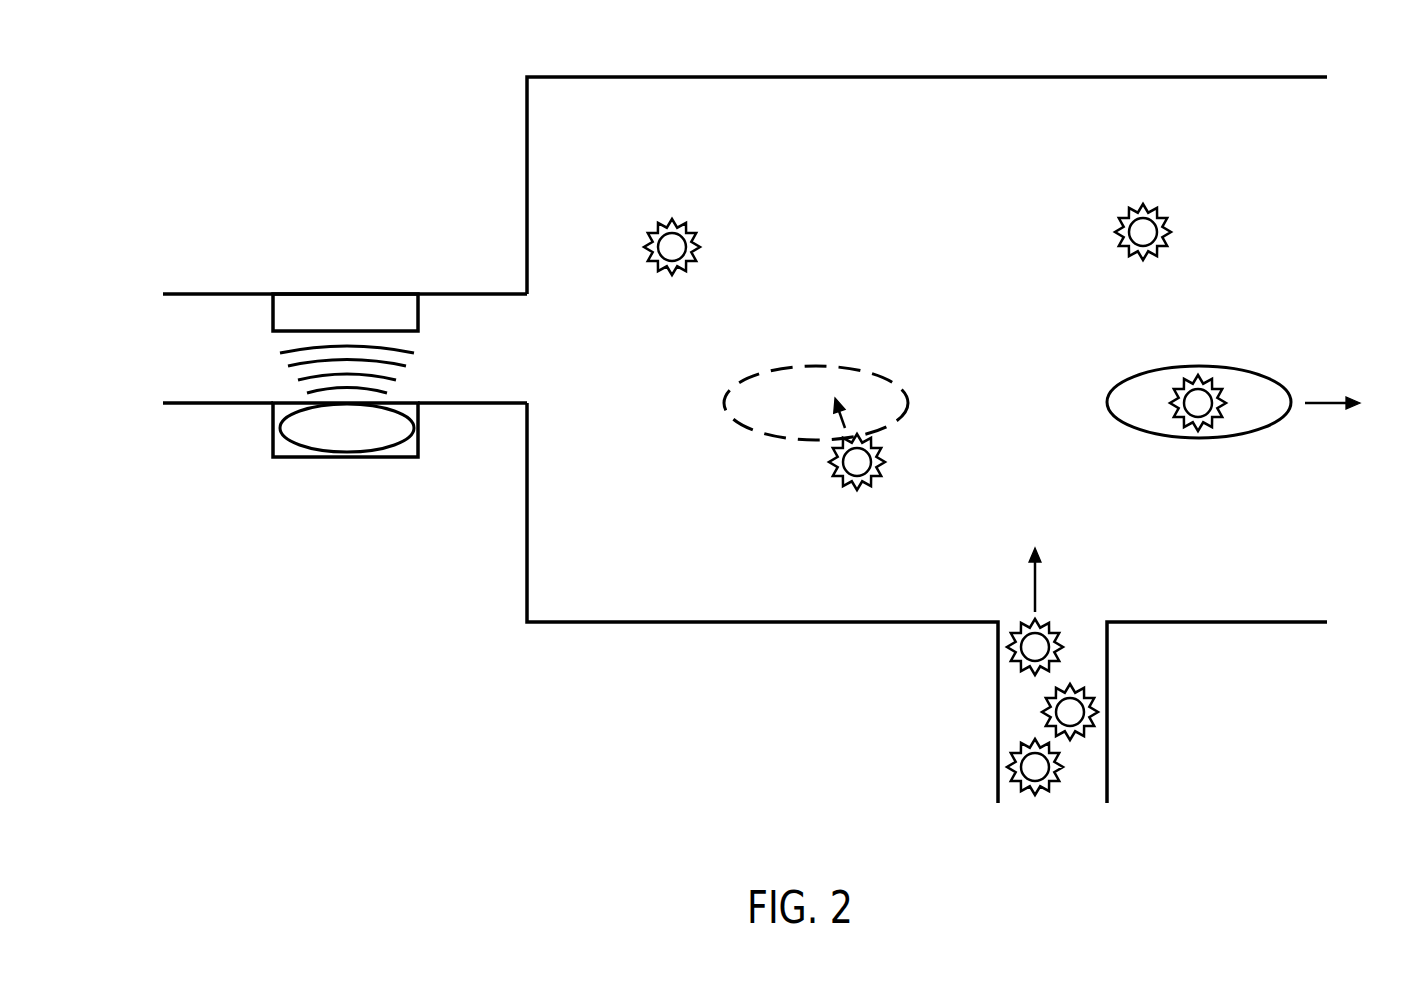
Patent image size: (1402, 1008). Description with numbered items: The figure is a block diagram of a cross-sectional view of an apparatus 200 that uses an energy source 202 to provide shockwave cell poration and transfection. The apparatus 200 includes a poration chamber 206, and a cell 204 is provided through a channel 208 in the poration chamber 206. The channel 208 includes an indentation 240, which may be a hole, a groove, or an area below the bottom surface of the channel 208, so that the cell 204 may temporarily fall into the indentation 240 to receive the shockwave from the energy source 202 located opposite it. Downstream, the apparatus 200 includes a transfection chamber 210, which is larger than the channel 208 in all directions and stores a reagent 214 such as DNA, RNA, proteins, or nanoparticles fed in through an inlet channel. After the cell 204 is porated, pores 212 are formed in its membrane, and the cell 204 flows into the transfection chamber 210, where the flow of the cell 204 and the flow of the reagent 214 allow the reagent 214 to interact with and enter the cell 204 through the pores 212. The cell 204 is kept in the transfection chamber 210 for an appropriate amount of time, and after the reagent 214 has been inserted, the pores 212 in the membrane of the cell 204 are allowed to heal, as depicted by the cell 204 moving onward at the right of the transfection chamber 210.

The apparatus 200 is at (163, 32).
The energy source 202 is at (418, 310).
The cell 204 is at (413, 430).
The poration chamber 206 is at (222, 293).
The channel 208 is at (222, 361).
The transfection chamber 210 is at (965, 142).
The pores 212 is at (775, 372).
The reagent 214 is at (877, 460).
The indentation 240 is at (283, 448).